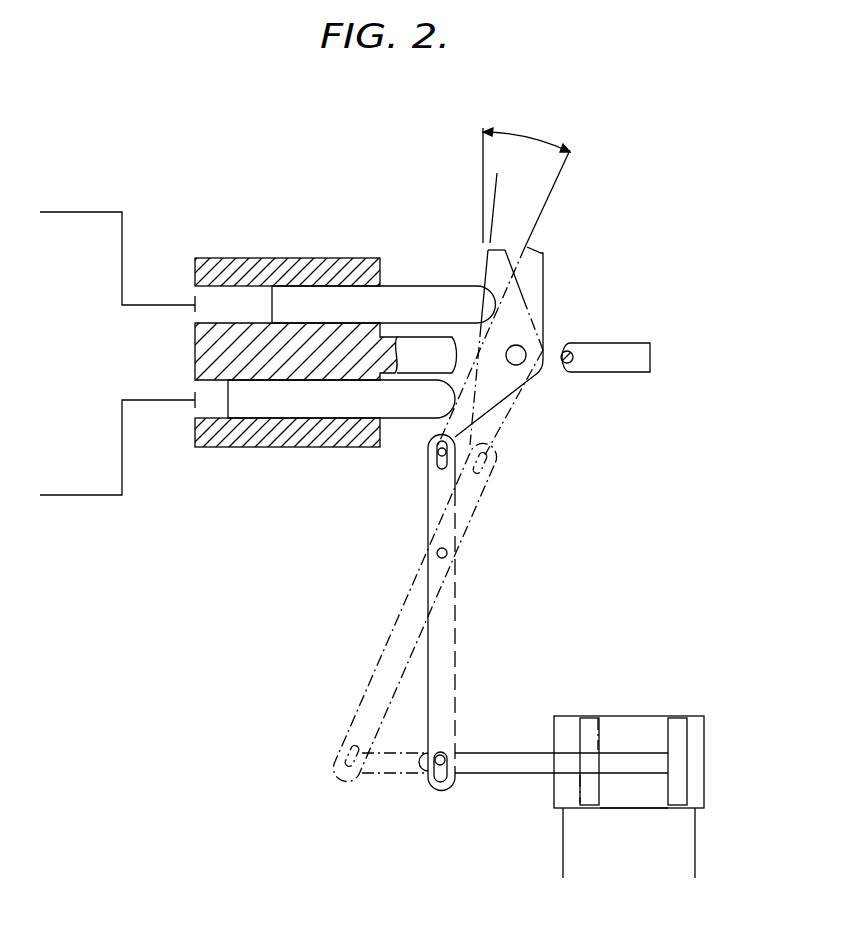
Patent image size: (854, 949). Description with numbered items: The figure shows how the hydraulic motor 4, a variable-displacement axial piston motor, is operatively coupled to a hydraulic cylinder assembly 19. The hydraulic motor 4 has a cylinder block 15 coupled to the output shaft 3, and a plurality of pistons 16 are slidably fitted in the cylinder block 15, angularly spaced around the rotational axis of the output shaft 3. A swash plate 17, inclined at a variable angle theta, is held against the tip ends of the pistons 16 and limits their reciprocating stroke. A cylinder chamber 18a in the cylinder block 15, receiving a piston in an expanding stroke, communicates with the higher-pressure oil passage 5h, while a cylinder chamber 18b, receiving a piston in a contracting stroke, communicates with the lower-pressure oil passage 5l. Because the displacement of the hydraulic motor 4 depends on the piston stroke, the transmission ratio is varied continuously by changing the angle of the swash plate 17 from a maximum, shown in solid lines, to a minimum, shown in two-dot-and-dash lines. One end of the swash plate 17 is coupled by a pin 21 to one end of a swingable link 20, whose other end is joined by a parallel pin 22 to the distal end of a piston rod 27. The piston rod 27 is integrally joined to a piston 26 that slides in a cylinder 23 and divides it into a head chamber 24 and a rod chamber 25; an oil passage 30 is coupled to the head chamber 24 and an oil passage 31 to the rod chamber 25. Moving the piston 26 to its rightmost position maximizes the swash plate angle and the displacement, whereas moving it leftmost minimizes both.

The output shaft 3 is at (612, 345).
The hydraulic motor 4 is at (315, 324).
The lower-pressure oil passage 5l is at (72, 210).
The higher-pressure oil passage 5h is at (72, 498).
The cylinder block 15 is at (330, 258).
The pistons 16 is at (422, 293).
The swash plate 17 is at (540, 285).
The cylinder chamber 18a is at (203, 408).
The cylinder chamber 18b is at (203, 298).
The hydraulic cylinder assembly 19 is at (634, 766).
The swingable link 20 is at (452, 650).
The pin 21 is at (433, 460).
The pin 22 is at (446, 762).
The cylinder 23 is at (597, 716).
The head chamber 24 is at (700, 757).
The rod chamber 25 is at (633, 802).
The piston 26 is at (677, 722).
The piston rod 27 is at (512, 767).
The oil passage 30 is at (696, 842).
The oil passage 31 is at (563, 847).